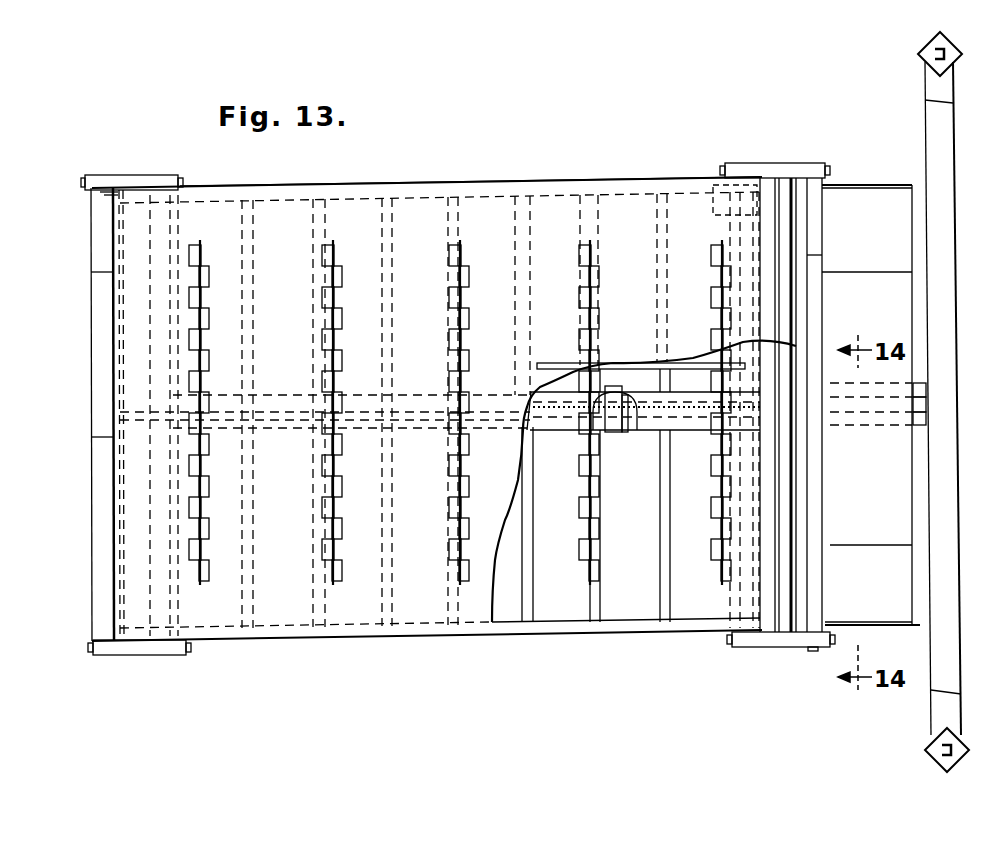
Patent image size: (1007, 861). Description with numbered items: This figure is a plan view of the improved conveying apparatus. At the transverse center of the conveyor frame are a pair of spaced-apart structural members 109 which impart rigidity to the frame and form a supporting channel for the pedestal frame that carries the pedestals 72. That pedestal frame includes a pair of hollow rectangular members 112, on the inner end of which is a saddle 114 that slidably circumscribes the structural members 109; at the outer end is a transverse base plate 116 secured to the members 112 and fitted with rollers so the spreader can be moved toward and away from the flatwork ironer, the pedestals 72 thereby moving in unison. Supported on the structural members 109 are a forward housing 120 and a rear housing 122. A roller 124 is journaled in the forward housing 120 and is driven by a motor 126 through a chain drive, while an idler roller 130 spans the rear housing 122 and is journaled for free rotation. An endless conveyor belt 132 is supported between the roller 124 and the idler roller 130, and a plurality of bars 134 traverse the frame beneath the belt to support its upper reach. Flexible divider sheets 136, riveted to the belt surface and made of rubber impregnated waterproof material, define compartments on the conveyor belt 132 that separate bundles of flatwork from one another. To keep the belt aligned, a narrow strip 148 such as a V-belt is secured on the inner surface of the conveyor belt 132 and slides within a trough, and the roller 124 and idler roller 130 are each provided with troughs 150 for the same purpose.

The pedestal 72 is at (950, 60).
The transverse base plate 116 is at (950, 210).
The forward housing 120 is at (757, 164).
The rear housing 122 is at (134, 177).
The roller 124 is at (800, 234).
The motor 126 is at (722, 186).
The idler roller 130 is at (128, 580).
The conveyor belt 132 is at (425, 208).
The bars 134 is at (590, 583).
The divider sheets 136 is at (335, 548).
The narrow strip 148 is at (697, 410).
The troughs 150 is at (142, 397).
The structural members 109 is at (598, 430).
The hollow rectangular members 112 is at (626, 432).
The saddle 114 is at (613, 432).